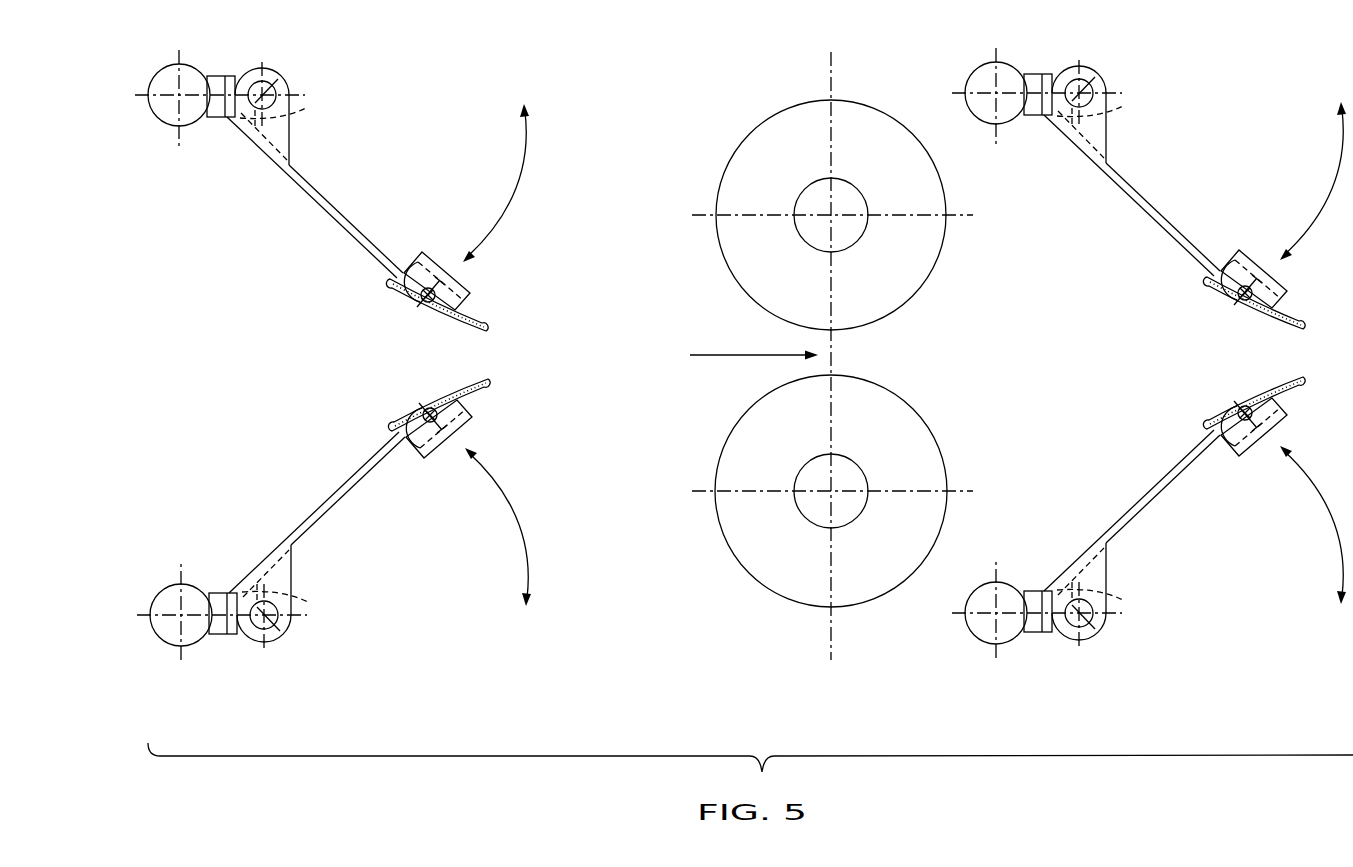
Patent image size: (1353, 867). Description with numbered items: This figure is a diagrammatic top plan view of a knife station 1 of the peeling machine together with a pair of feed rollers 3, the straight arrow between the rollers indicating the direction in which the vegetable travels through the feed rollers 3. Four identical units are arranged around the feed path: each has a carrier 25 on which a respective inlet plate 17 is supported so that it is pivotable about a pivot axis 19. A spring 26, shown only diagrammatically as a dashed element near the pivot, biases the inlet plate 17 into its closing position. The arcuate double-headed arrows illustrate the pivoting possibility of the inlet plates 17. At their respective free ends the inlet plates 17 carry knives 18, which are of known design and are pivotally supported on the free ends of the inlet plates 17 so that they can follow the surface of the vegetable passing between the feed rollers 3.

The knife station 1 is at (393, 106).
The feed rollers 3 is at (745, 165).
The inlet plate 17 is at (342, 225).
The knife 18 is at (474, 318).
The pivot axis 19 is at (281, 72).
The carrier 25 is at (194, 69).
The spring 26 is at (306, 108).